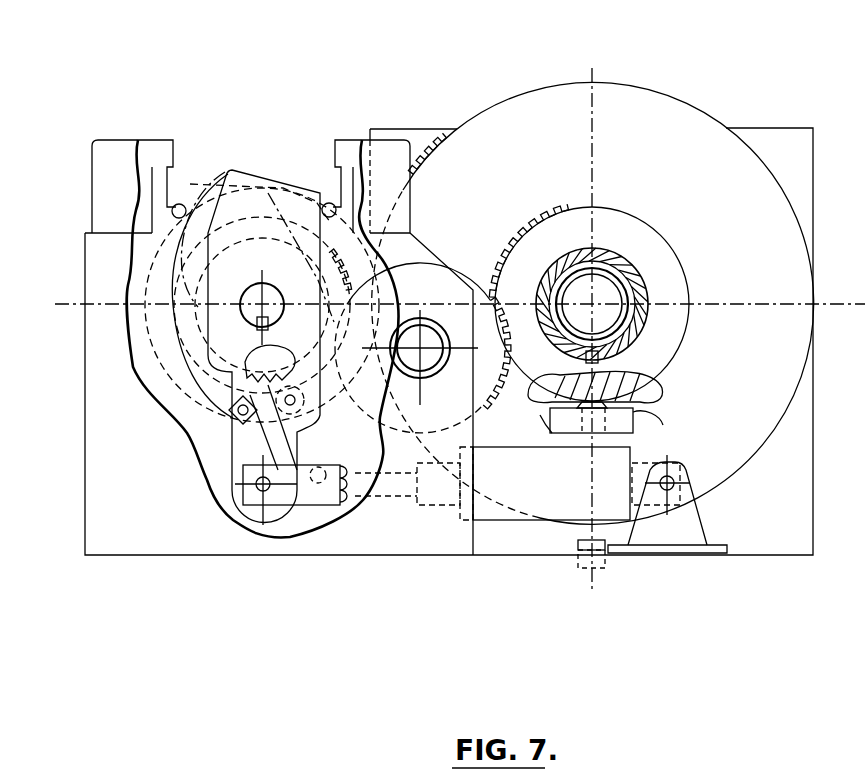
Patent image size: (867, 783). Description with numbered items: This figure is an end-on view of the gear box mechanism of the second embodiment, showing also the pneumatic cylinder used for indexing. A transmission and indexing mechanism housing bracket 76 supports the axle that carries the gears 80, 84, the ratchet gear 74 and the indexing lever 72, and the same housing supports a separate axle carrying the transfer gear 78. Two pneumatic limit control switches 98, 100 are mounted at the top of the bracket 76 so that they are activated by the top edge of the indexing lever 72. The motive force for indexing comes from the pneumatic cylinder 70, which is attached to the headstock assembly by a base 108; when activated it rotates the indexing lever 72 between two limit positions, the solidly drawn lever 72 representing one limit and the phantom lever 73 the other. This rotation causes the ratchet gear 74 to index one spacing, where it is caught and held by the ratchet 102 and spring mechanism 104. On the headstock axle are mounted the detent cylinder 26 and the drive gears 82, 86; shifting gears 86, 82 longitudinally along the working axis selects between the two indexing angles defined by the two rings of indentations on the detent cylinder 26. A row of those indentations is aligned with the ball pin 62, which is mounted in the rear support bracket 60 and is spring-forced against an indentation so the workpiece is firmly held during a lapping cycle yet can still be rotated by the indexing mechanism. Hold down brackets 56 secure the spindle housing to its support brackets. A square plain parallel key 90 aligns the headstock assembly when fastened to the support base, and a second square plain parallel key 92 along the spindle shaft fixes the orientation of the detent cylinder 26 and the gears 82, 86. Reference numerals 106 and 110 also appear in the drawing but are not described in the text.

The detent cylinder 26 is at (640, 388).
The hold down brackets 56 is at (787, 128).
The rear support bracket 60 is at (640, 419).
The ball pin 62 is at (655, 392).
The pneumatic cylinder 70 is at (512, 522).
The indexing lever 72 is at (240, 452).
The phantom lever 73 is at (240, 468).
The ratchet gear 74 is at (232, 409).
The transmission and indexing mechanism housing bracket 76 is at (85, 490).
The transfer gear 78 is at (470, 290).
The gear 80 is at (342, 218).
The drive gear 82 is at (605, 206).
The gear 84 is at (318, 241).
The drive gear 86 is at (600, 82).
The square plain parallel key 90 is at (597, 568).
The second square plain parallel key 92 is at (583, 352).
The pneumatic limit control switch 98 is at (152, 140).
The pneumatic limit control switch 100 is at (345, 140).
The ratchet 102 is at (248, 372).
The spring mechanism 104 is at (232, 441).
The mounting bracket 106 is at (700, 508).
The base 108 is at (630, 360).
The bearing 110 is at (657, 322).